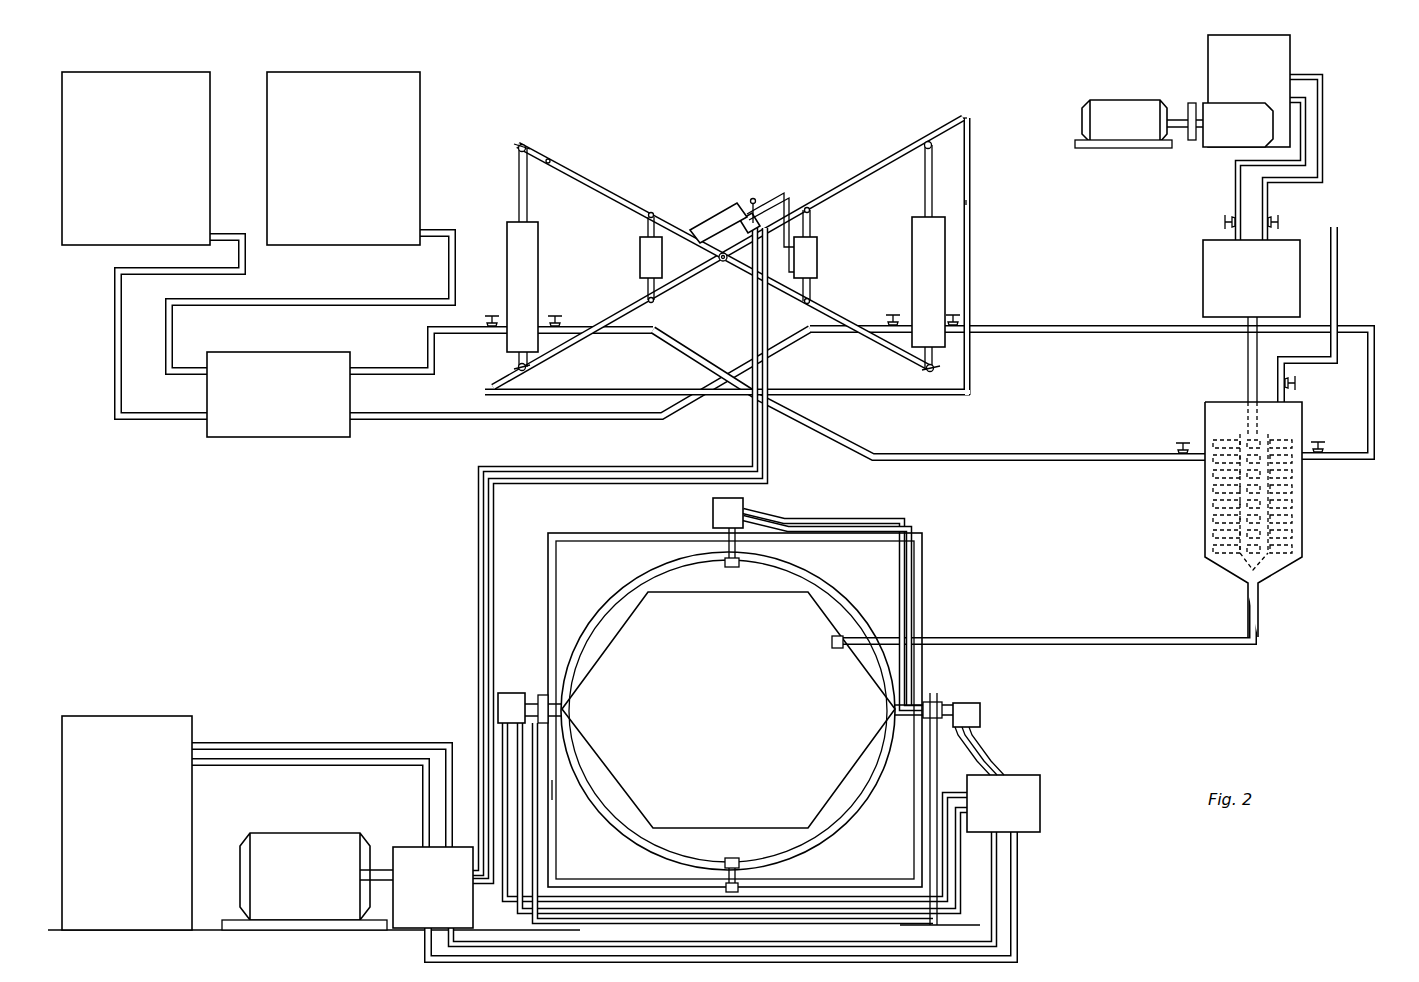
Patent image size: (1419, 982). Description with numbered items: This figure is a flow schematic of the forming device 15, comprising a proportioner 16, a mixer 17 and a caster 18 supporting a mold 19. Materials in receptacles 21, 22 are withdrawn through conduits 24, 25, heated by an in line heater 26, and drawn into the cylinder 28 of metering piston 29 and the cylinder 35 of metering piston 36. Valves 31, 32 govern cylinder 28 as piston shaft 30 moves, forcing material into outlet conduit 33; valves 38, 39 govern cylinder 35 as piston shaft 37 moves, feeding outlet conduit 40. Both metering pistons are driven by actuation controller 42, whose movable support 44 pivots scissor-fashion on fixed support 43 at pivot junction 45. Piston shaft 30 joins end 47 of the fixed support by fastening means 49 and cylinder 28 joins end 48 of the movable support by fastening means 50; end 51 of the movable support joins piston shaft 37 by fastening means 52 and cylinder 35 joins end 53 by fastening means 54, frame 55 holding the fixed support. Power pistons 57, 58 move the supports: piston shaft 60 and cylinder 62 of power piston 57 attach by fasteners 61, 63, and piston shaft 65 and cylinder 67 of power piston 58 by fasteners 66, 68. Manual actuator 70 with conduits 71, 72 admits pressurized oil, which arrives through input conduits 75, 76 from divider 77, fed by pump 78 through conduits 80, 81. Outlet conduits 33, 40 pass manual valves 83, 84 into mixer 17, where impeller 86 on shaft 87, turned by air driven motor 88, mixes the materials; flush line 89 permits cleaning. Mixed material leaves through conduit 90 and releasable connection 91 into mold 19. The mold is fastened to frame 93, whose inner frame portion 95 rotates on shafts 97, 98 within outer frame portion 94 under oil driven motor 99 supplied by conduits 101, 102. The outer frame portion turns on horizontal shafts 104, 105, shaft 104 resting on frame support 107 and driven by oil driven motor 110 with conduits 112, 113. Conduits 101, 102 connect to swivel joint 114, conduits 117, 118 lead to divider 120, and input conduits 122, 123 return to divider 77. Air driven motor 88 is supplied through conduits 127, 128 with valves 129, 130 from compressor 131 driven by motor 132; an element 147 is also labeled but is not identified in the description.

The forming device 15 is at (1003, 131).
The proportioner 16 is at (717, 134).
The mixer 17 is at (1321, 555).
The caster 18 is at (957, 573).
The mold 19 is at (138, 817).
The storage receptacle 21 is at (146, 162).
The storage receptacle 22 is at (336, 165).
The conduit 24 is at (118, 312).
The conduit 25 is at (262, 299).
The in line heater 26 is at (258, 438).
The cylinder 28 is at (945, 300).
The metering piston 29 is at (945, 243).
The piston shaft 30 is at (933, 183).
The valve 31 is at (893, 316).
The valve 32 is at (958, 318).
The outlet conduit 33 is at (1097, 325).
The cylinder 35 is at (538, 300).
The metering piston 36 is at (538, 230).
The piston shaft 37 is at (528, 200).
The valve 38 is at (494, 316).
The valve 39 is at (558, 316).
The outlet conduit 40 is at (680, 335).
The actuation controller 42 is at (801, 125).
The fixed support 43 is at (862, 174).
The movable support 44 is at (636, 207).
The pivot junction 45 is at (723, 262).
The end of fixed support 47 is at (962, 116).
The end of movable support 48 is at (604, 191).
The fastening means 49 is at (927, 142).
The fastening means 50 is at (937, 368).
The end of movable support 51 is at (524, 145).
The fastening means 52 is at (548, 158).
The end of fixed support 53 is at (495, 387).
The fastening means 54 is at (527, 367).
The frame 55 is at (970, 198).
The power piston 57 is at (817, 258).
The power piston 58 is at (640, 258).
The piston shaft 60 is at (811, 228).
The fastener 61 is at (811, 212).
The cylinder 62 is at (811, 285).
The fastener 63 is at (805, 305).
The piston shaft 65 is at (646, 228).
The fastener 66 is at (654, 214).
The cylinder 67 is at (640, 276).
The fastener 68 is at (645, 300).
The manual actuator 70 is at (758, 198).
The conduit 71 is at (787, 204).
The conduit 72 is at (803, 210).
The input conduit 75 is at (752, 340).
The input conduit 76 is at (768, 370).
The divider 77 is at (422, 897).
The pump 78 is at (294, 888).
The conduit 80 is at (330, 764).
The conduit 81 is at (345, 744).
The manual valve 83 is at (1320, 440).
The manual valve 84 is at (1186, 440).
The impeller 86 is at (1205, 504).
The shaft 87 is at (1247, 378).
The air driven motor 88 is at (1203, 292).
The flush line 89 is at (1339, 288).
The conduit 90 is at (1216, 646).
The connection 91 is at (838, 650).
The frame 93 is at (826, 505).
The outer frame portion 94 is at (548, 558).
The inner frame portion 95 is at (832, 572).
The shaft 97 is at (722, 540).
The shaft 98 is at (738, 862).
The oil driven motor 99 is at (713, 506).
The conduit 101 is at (872, 519).
The conduit 102 is at (906, 526).
The shaft 104 is at (541, 695).
The shaft 105 is at (938, 695).
The frame support 107 is at (550, 790).
The oil driven motor 110 is at (512, 693).
The conduit 112 is at (692, 900).
The conduit 113 is at (738, 912).
The swivel joint 114 is at (980, 708).
The conduit 117 is at (985, 750).
The conduit 118 is at (1000, 767).
The divider 120 is at (1018, 814).
The input conduit 122 is at (998, 890).
The input conduit 123 is at (1018, 915).
The conduit 127 is at (1233, 193).
The conduit 128 is at (1270, 193).
The valve 129 is at (1224, 226).
The valve 130 is at (1283, 222).
The compressor 131 is at (1272, 68).
The motor 132 is at (1128, 99).
The manifold 147 is at (718, 217).